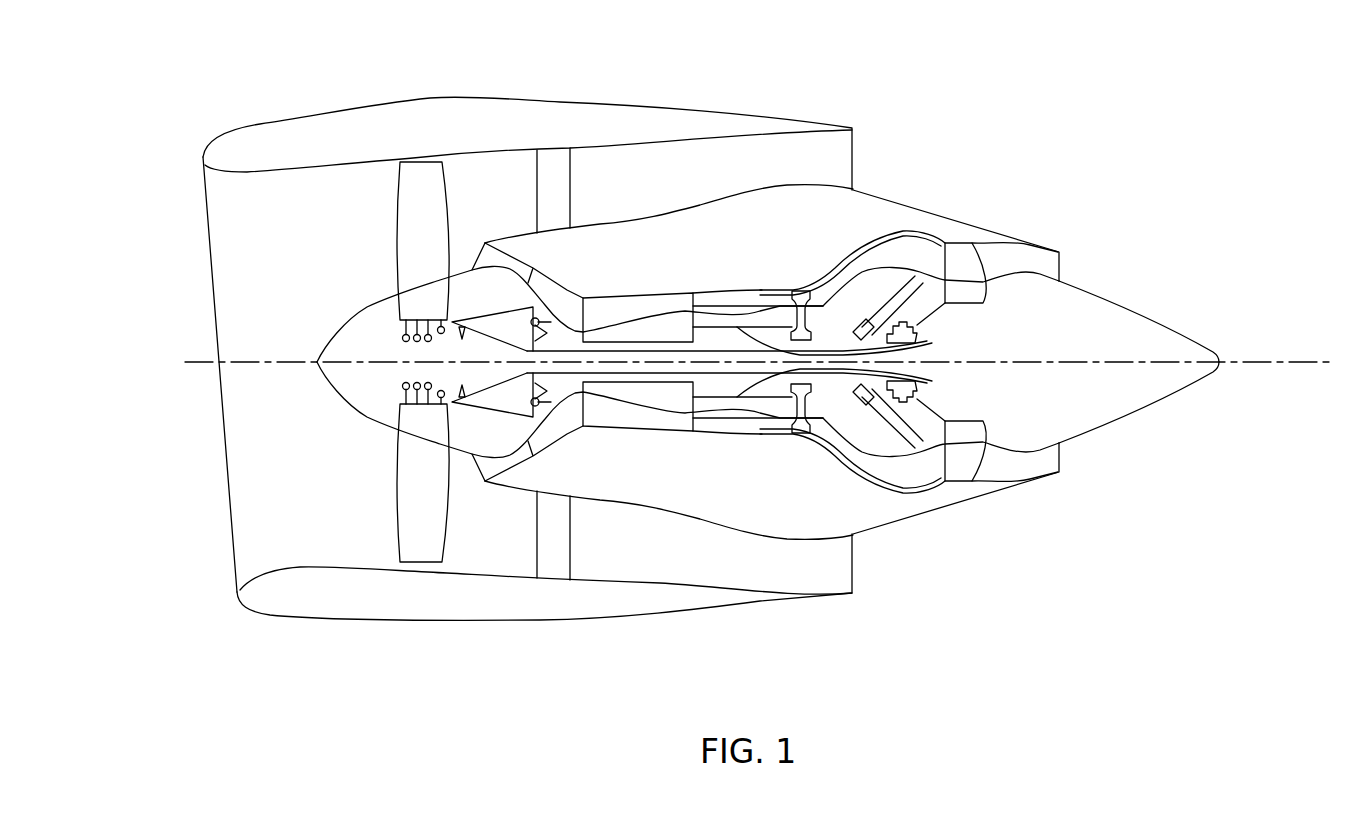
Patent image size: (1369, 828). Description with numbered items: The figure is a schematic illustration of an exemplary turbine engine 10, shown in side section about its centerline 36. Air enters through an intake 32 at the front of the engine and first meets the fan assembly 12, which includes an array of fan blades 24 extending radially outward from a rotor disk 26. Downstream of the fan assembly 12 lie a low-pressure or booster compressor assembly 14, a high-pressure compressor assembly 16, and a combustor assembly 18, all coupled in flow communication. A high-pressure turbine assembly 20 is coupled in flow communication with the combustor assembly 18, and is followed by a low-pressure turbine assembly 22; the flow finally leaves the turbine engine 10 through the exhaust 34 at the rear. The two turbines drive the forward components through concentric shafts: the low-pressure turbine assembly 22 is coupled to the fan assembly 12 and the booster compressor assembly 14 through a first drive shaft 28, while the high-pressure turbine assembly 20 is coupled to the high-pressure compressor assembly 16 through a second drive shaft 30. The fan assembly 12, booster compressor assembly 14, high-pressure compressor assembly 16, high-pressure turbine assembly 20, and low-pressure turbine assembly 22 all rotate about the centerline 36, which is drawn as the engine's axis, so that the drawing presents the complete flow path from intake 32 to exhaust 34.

The turbine engine 10 is at (997, 64).
The fan assembly 12 is at (366, 234).
The booster compressor assembly 14 is at (478, 222).
The high-pressure compressor assembly 16 is at (634, 278).
The combustor assembly 18 is at (738, 269).
The high-pressure turbine assembly 20 is at (807, 262).
The low-pressure turbine assembly 22 is at (885, 216).
The fan blades 24 is at (437, 247).
The rotor disk 26 is at (388, 352).
The first drive shaft 28 is at (567, 351).
The second drive shaft 30 is at (845, 351).
The intake 32 is at (148, 198).
The exhaust 34 is at (1089, 253).
The centerline 36 is at (1264, 362).